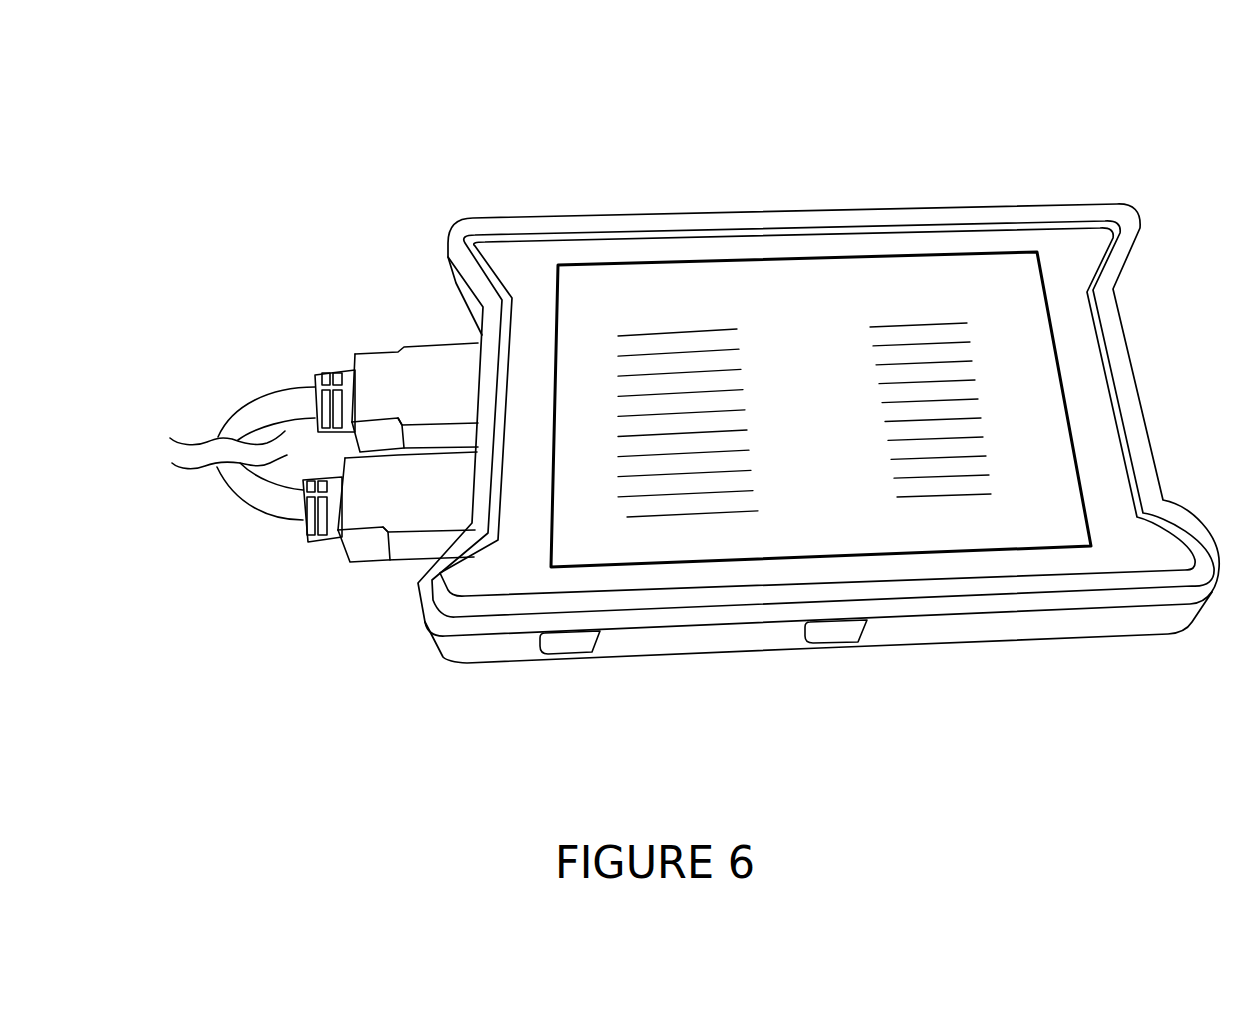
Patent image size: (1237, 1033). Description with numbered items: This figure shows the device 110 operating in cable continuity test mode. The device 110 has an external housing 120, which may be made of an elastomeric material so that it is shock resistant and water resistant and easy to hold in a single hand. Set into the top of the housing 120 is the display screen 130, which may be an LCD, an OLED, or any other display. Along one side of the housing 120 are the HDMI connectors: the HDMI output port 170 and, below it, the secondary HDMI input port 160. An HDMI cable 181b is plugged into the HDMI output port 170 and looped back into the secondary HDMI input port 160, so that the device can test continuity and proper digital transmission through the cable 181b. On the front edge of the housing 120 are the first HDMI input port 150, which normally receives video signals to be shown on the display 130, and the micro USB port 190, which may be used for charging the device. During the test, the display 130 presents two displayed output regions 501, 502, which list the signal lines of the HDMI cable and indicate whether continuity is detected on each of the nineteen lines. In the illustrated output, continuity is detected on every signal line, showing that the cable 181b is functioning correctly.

The device 110 is at (718, 100).
The external housing 120 is at (1007, 610).
The display screen 130 is at (810, 303).
The first HDMI input port 150 is at (570, 643).
The secondary HDMI input port 160 is at (472, 486).
The HDMI output port 170 is at (482, 362).
The HDMI cable 181b is at (277, 378).
The micro USB port 190 is at (845, 632).
The video 501 is at (692, 303).
The second port mapping table 502 is at (935, 297).